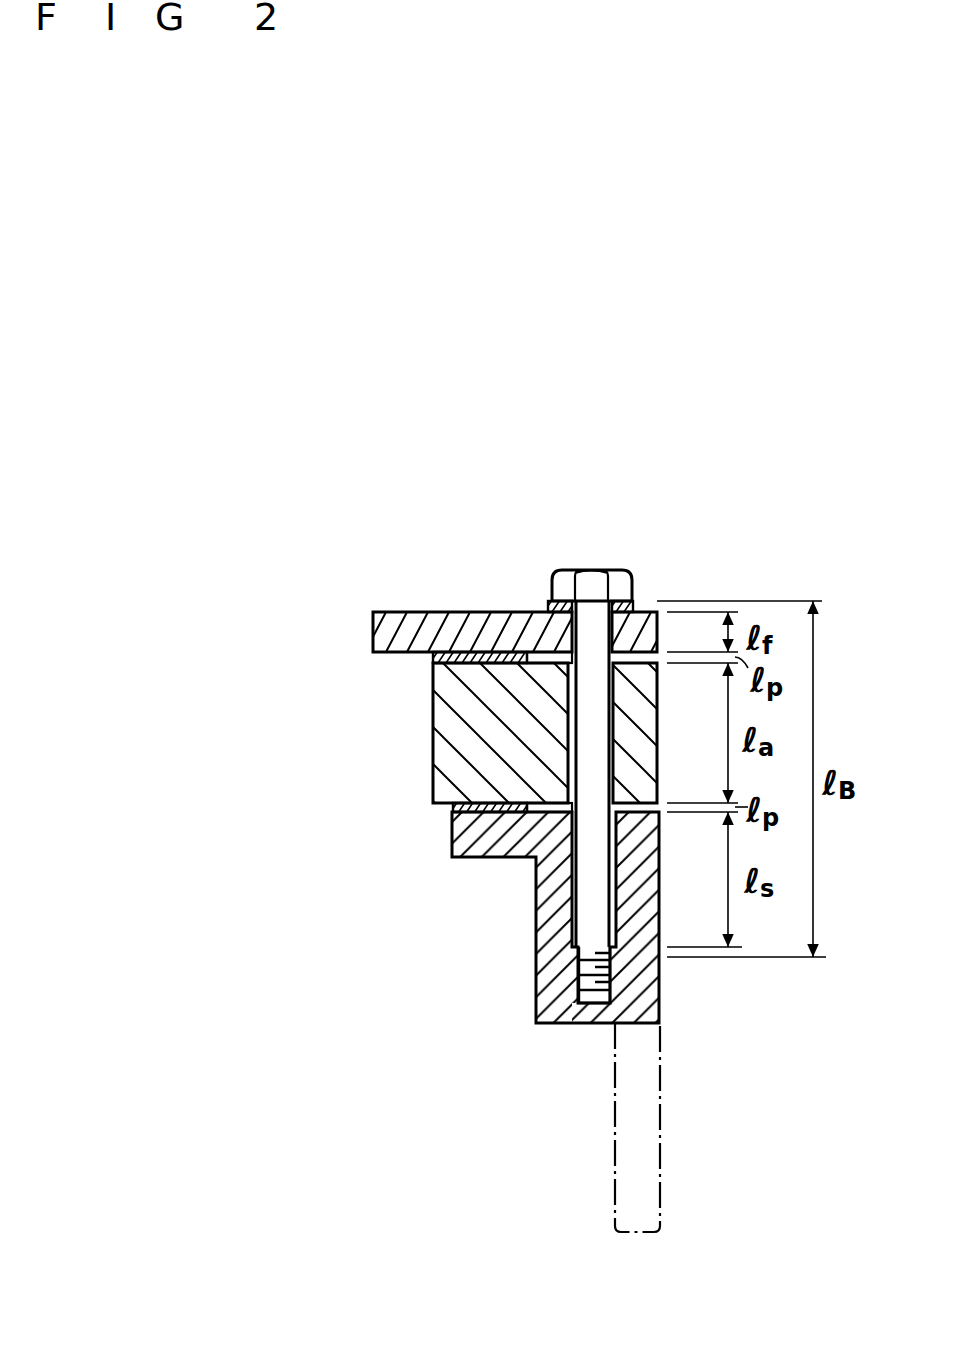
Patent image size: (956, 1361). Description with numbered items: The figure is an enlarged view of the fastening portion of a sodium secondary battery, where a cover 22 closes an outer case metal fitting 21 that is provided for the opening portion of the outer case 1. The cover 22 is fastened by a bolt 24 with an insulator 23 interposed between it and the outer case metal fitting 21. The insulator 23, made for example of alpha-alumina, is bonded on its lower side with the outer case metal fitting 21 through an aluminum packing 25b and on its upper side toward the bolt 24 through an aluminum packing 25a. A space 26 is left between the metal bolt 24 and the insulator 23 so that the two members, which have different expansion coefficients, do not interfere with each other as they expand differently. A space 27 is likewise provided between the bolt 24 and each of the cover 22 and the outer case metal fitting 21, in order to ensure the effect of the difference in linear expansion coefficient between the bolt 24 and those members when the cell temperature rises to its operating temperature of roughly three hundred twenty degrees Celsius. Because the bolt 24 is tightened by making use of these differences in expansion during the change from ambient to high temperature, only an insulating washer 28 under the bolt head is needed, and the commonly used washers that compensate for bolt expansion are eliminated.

The outer case 1 is at (650, 1135).
The outer case metal fitting 21 is at (648, 987).
The cover 22 is at (460, 612).
The insulator 23 is at (438, 713).
The bolt 24 is at (592, 570).
The aluminum packing 25a is at (432, 657).
The aluminum packing 25b is at (453, 805).
The space 26 is at (568, 757).
The space 27 is at (576, 896).
The insulating washer 28 is at (548, 603).